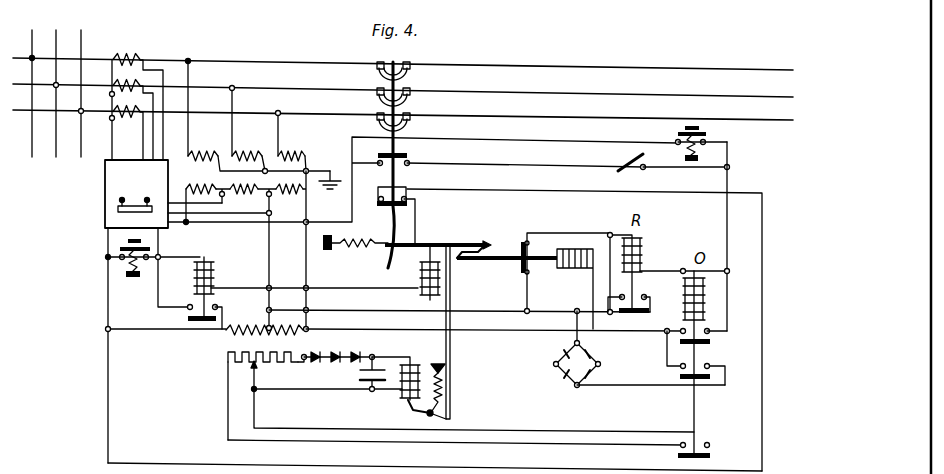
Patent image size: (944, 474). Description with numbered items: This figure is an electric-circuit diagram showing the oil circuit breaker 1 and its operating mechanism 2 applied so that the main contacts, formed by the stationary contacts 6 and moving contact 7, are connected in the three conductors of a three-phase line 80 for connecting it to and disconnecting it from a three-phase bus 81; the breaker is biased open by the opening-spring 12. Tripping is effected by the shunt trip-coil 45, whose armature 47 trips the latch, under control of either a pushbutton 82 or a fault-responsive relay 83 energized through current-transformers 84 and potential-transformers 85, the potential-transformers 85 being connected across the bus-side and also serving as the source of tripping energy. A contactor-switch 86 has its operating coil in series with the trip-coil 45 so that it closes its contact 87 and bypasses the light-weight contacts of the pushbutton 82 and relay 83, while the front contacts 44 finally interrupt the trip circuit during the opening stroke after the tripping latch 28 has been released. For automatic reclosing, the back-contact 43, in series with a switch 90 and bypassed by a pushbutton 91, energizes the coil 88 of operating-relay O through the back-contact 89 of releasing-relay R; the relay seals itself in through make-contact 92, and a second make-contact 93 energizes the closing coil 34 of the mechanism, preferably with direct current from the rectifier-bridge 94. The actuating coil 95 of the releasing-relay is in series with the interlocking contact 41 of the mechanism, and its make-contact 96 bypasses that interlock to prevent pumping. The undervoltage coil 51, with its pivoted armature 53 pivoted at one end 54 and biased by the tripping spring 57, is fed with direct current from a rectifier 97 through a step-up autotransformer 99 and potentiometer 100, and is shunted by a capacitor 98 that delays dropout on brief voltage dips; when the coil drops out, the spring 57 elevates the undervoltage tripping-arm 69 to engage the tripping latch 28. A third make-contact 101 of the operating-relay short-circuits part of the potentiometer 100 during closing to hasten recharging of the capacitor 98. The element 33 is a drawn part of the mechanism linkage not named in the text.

The oil circuit breaker 1 is at (386, 130).
The operating mechanism 2 is at (438, 237).
The stationary contacts 6 is at (380, 63).
The moving contact 7 is at (397, 64).
The opening-spring 12 is at (355, 255).
The tripping latch 28 is at (481, 240).
The armature bar 33 is at (536, 270).
The closing coil 34 is at (577, 270).
The interlocking contact 41 is at (522, 242).
The back-contact 43 is at (410, 162).
The front contacts 44 is at (386, 212).
The shunt trip-coil 45 is at (390, 268).
The armature 47 is at (418, 293).
The undervoltage coil 51 is at (420, 352).
The pivoted armature 53 is at (405, 399).
The pivoted end 54 is at (425, 417).
The tripping spring 57 is at (443, 385).
The undervoltage tripping-arm 69 is at (453, 298).
The three-phase line 80 is at (605, 118).
The three-phase bus 81 is at (38, 52).
The pushbutton 82 is at (128, 241).
The fault-responsive relay 83 is at (146, 187).
The current-transformers 84 is at (138, 54).
The potential-transformers 85 is at (330, 164).
The contactor-switch 86 is at (208, 262).
The contact 87 is at (186, 313).
The coil of operating-relay 88 is at (706, 296).
The back-contact of releasing-relay 89 is at (645, 318).
The switch 90 is at (621, 161).
The pushbutton 91 is at (706, 137).
The make-contact 92 is at (712, 334).
The second make-contact 93 is at (712, 367).
The rectifier-bridge 94 is at (560, 372).
The actuating coil 95 is at (648, 252).
The make-contact 96 is at (648, 302).
The rectifier 97 is at (352, 356).
The capacitor 98 is at (358, 380).
The step-up autotransformer 99 is at (223, 334).
The potentiometer 100 is at (266, 366).
The third make-contact 101 is at (712, 446).